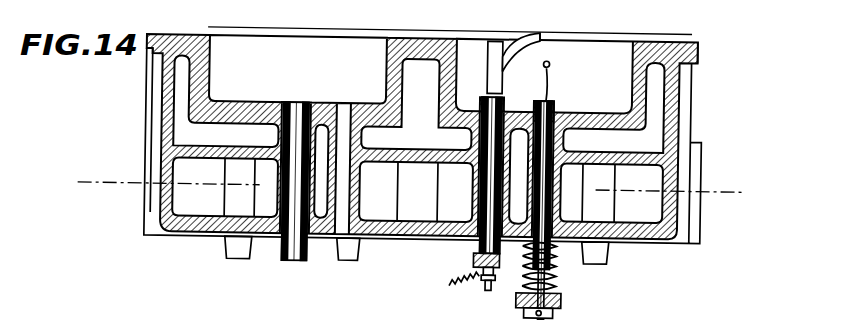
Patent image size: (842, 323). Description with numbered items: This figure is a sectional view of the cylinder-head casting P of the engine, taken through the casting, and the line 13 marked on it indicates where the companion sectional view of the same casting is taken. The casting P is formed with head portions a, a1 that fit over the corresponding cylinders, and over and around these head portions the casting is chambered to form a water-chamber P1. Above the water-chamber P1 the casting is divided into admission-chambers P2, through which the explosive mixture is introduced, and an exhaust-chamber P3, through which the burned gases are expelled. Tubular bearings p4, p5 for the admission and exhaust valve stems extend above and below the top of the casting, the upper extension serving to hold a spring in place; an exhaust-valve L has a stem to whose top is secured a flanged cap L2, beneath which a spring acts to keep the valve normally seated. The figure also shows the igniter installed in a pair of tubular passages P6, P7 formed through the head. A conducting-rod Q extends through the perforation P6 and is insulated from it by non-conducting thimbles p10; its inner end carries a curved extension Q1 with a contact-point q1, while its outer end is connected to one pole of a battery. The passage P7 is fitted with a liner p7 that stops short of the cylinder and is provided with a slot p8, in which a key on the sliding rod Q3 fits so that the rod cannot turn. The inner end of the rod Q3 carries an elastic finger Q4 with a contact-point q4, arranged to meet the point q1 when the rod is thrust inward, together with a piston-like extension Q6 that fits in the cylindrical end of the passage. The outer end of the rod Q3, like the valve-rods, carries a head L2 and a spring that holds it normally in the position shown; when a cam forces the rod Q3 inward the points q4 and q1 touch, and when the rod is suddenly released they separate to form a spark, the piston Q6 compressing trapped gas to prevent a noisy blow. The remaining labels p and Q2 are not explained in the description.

The cylinder-head casting P is at (160, 128).
The water-chamber P1 is at (418, 137).
The admission-chamber P2 is at (414, 190).
The exhaust-chamber P3 is at (417, 192).
The tubular passage P6 is at (480, 206).
The tubular passage P7 is at (306, 246).
The valve stem p is at (506, 252).
The tubular bearing p4 is at (228, 248).
The tubular bearing p5 is at (357, 256).
The liner p7 is at (283, 241).
The slot p8 is at (589, 251).
The non-conducting thimble p10 is at (476, 245).
The conducting-rod Q is at (557, 248).
The curved extension Q1 is at (513, 63).
The spring Q2 is at (488, 276).
The rod Q3 is at (518, 176).
The elastic finger Q4 is at (554, 93).
The piston-like extension Q6 is at (556, 98).
The contact-point q1 is at (545, 31).
The contact-point q4 is at (538, 73).
The head portion a is at (544, 76).
The head portion a1 is at (298, 69).
The exhaust-valve L is at (530, 278).
The flanged cap L2 is at (563, 297).
The section line 13 is at (409, 190).